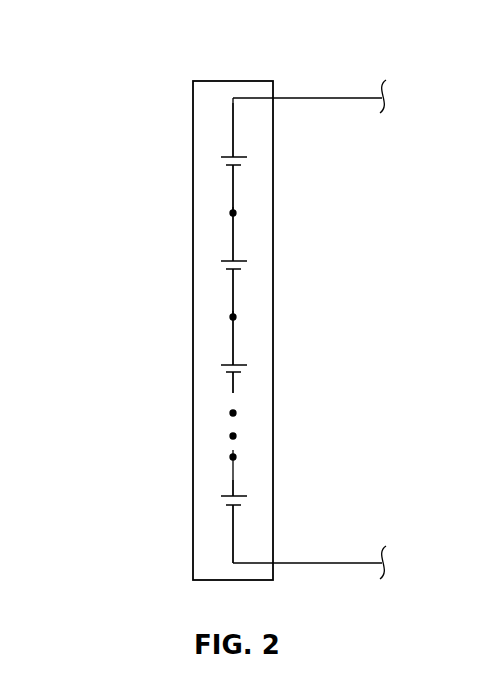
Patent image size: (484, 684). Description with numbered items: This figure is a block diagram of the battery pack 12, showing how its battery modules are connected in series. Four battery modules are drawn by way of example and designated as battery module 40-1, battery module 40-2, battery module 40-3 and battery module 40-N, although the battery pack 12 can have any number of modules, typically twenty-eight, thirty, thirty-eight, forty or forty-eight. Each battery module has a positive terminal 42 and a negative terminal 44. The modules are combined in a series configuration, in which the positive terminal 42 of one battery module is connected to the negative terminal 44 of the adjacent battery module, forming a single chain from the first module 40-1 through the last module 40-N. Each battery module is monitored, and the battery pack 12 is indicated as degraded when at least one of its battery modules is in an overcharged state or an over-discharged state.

The battery pack 12 is at (112, 76).
The battery module 40-1 is at (221, 155).
The battery module 40-2 is at (221, 259).
The battery module 40-3 is at (221, 363).
The battery module 40-N is at (221, 494).
The positive terminal 42 is at (233, 113).
The negative terminal 44 is at (233, 182).